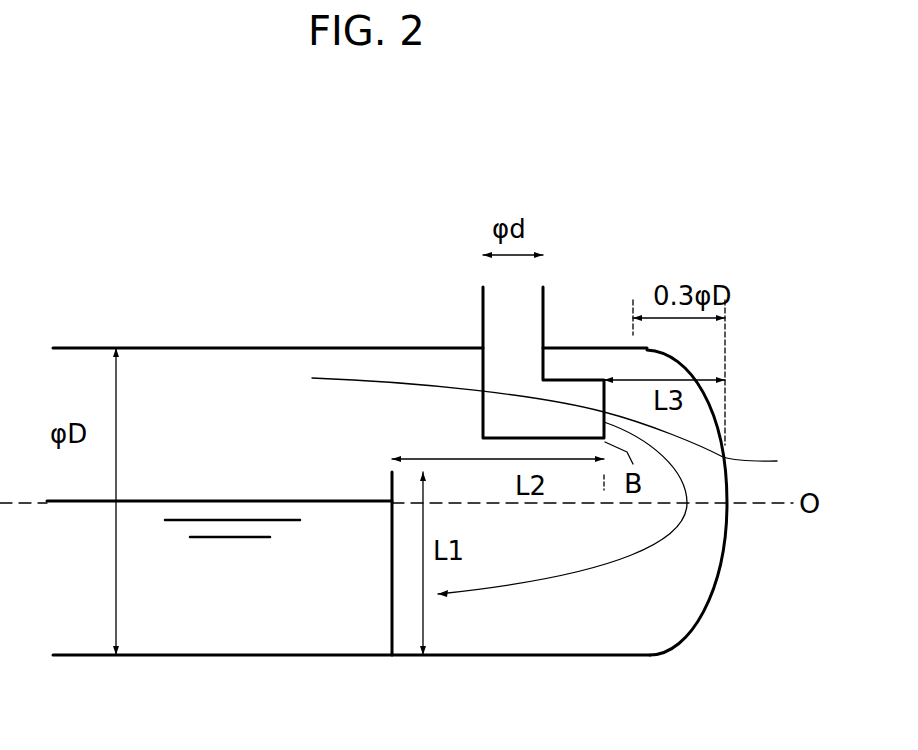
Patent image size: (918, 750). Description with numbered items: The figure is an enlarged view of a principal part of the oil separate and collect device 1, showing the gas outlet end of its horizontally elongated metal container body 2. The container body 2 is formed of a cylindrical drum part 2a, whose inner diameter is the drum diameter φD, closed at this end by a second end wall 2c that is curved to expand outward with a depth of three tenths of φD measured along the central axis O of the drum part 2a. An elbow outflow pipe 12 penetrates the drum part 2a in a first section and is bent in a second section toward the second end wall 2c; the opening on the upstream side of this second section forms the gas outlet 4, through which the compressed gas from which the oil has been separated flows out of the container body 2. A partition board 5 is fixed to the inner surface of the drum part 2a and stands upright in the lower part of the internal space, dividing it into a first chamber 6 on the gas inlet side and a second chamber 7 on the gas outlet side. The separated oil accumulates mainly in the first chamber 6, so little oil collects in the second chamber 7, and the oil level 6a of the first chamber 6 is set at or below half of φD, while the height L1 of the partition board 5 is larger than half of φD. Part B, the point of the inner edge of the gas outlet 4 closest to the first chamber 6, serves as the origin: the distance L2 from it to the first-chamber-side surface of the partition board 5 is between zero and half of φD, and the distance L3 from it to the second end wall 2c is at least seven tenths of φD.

The oil separate and collect device 1 is at (283, 263).
The container body 2 is at (158, 347).
The drum part 2a is at (305, 347).
The second end wall 2c is at (727, 547).
The gas outlet 4 is at (553, 427).
The partition board 5 is at (390, 588).
The first chamber 6 is at (225, 597).
The oil level 6a is at (188, 501).
The second chamber 7 is at (557, 626).
The elbow outflow pipe 12 is at (575, 380).